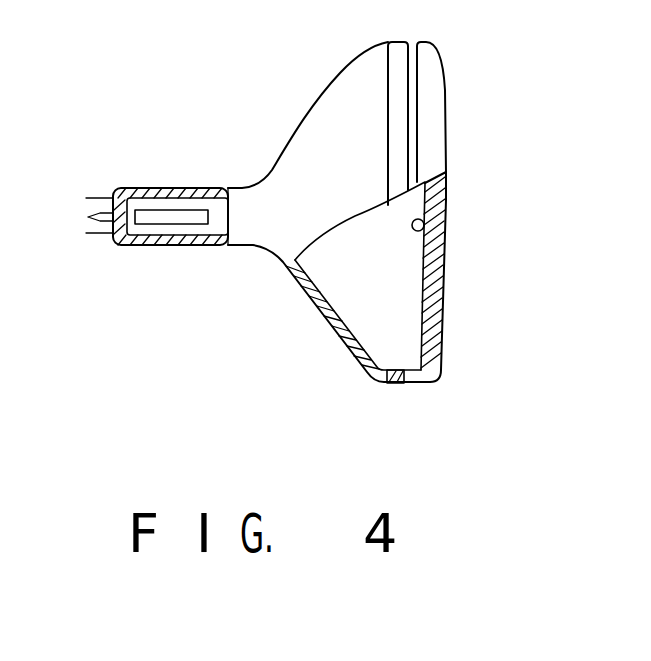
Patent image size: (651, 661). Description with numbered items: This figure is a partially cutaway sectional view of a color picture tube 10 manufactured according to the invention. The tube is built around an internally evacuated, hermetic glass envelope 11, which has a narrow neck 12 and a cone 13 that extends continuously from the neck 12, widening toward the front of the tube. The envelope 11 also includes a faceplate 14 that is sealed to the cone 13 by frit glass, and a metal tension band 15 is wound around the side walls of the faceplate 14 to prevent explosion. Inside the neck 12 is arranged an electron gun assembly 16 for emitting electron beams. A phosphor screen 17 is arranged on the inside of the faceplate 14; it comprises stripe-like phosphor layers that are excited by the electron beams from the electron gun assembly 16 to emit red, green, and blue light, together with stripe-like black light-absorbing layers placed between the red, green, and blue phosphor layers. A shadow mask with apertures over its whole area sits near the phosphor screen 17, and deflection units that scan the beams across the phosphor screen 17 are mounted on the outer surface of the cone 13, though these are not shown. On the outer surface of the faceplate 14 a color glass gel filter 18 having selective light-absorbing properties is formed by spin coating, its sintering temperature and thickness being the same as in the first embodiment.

The color picture tube 10 is at (287, 332).
The glass envelope 11 is at (253, 250).
The neck 12 is at (145, 188).
The cone 13 is at (297, 132).
The faceplate 14 is at (446, 295).
The metal tension band 15 is at (397, 383).
The electron gun assembly 16 is at (147, 228).
The phosphor screen 17 is at (425, 227).
The color glass gel filter 18 is at (428, 118).